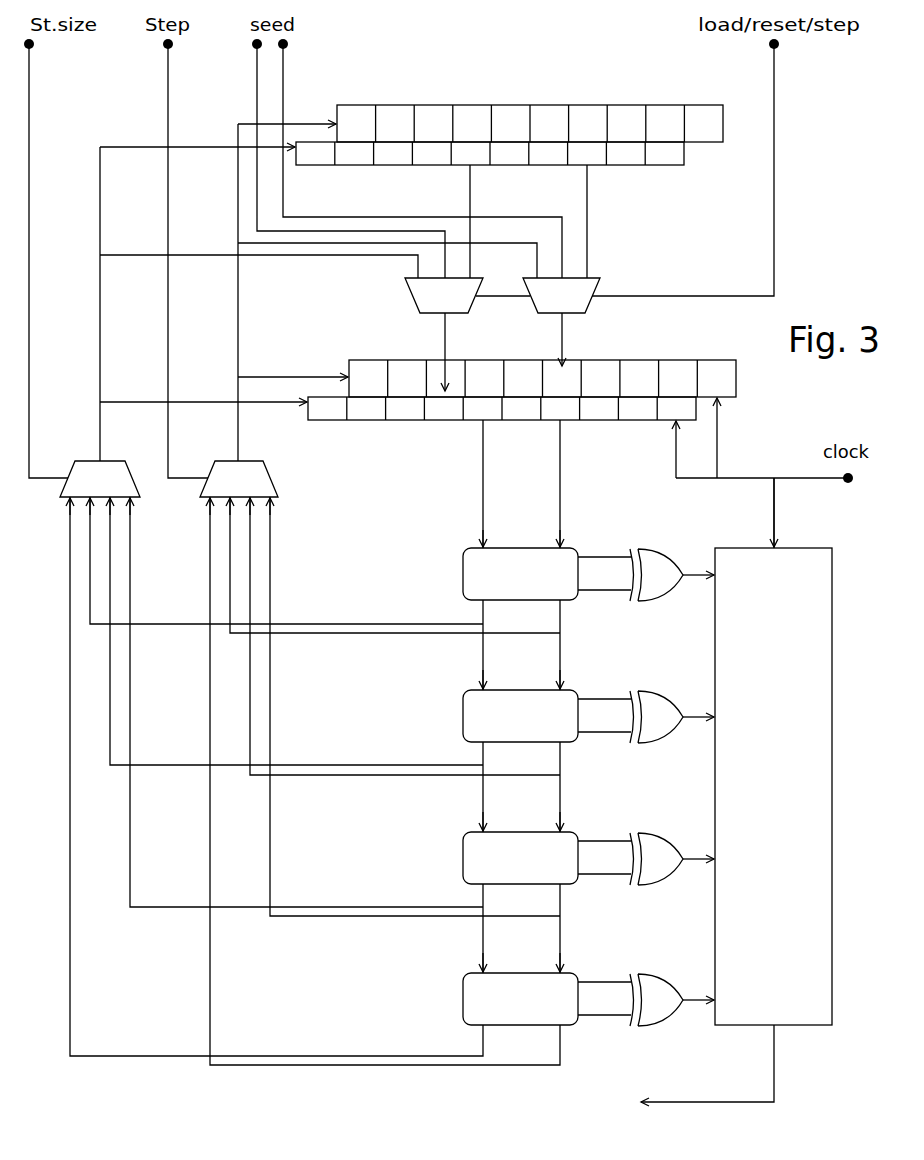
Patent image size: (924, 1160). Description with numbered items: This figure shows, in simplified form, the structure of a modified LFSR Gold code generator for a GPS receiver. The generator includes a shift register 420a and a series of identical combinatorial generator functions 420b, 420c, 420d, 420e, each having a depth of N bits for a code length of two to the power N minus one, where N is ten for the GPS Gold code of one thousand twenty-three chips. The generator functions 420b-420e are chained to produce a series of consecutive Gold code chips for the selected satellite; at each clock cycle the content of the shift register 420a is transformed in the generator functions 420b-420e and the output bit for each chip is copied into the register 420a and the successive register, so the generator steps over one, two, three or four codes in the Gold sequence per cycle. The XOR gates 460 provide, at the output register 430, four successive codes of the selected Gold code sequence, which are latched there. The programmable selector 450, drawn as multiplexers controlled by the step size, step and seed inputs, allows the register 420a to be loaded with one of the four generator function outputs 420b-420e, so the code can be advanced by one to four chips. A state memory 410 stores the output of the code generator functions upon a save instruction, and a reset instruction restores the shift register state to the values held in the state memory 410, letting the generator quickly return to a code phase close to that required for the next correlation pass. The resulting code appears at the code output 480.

The state memory 410 is at (589, 116).
The shift register 420a is at (645, 372).
The combinatorial generator function 420b is at (470, 558).
The combinatorial generator function 420c is at (470, 700).
The combinatorial generator function 420d is at (470, 842).
The combinatorial generator function 420e is at (470, 983).
The output register 430 is at (793, 558).
The programmable selector 450 is at (418, 300).
The XOR gate 460 is at (656, 577).
The code output 480 is at (650, 1097).